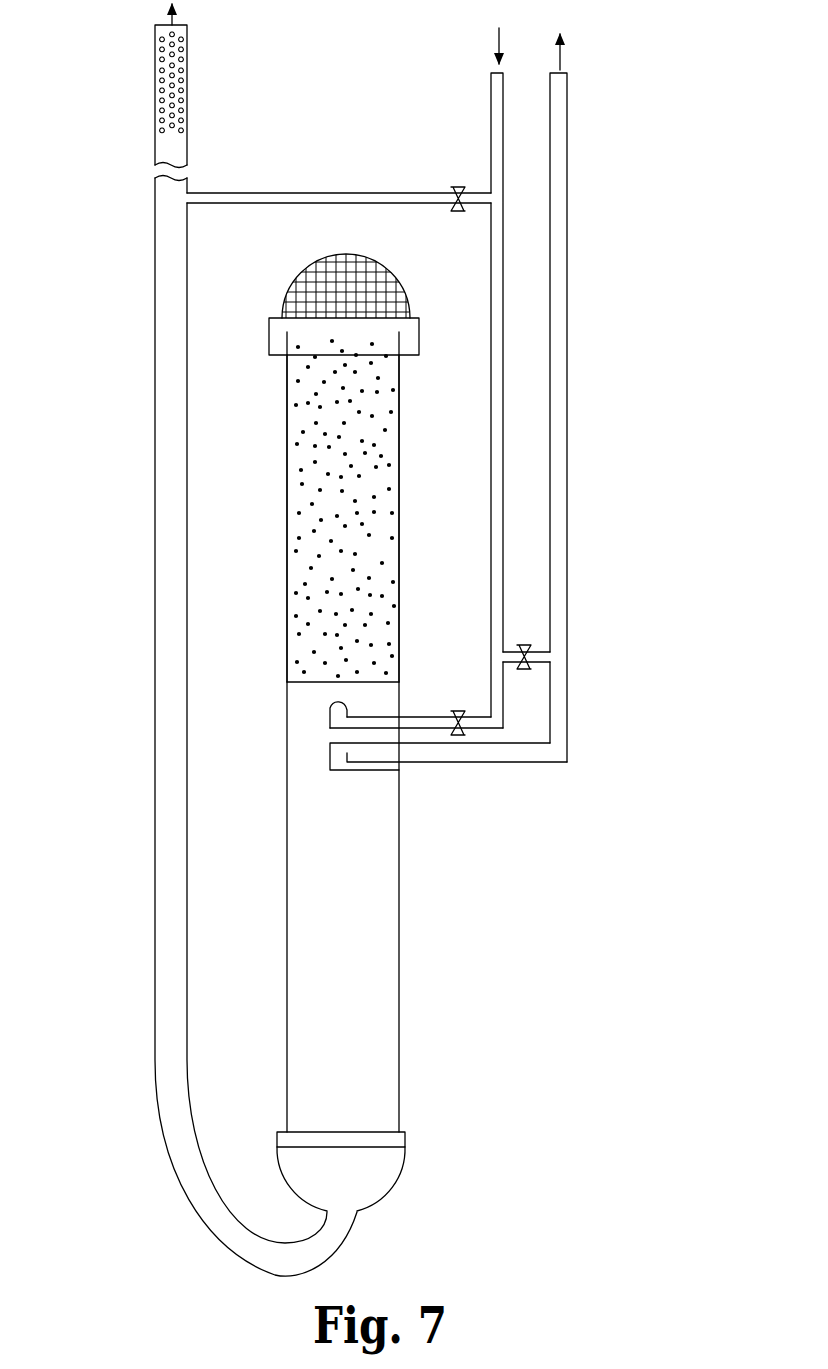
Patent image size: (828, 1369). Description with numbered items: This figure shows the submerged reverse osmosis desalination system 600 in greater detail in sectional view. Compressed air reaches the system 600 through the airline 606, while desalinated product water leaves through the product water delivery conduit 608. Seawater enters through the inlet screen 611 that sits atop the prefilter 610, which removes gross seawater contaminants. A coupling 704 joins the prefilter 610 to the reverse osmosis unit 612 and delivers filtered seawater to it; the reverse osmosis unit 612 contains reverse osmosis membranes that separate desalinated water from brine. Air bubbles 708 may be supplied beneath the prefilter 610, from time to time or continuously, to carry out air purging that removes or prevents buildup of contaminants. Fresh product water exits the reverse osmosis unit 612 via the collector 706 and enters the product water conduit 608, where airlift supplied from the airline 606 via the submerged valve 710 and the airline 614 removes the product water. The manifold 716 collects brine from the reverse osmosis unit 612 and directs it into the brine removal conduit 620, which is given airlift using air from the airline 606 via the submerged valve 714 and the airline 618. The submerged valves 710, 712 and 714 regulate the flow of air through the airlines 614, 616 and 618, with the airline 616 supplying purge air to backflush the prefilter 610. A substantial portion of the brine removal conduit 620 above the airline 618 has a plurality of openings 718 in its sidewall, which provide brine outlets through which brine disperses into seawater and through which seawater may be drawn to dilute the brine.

The system 600 is at (607, 142).
The airline 606 is at (490, 98).
The product water delivery conduit 608 is at (568, 396).
The prefilter 610 is at (287, 466).
The inlet screen 611 is at (284, 305).
The reverse osmosis unit 612 is at (286, 856).
The airline 614 is at (526, 643).
The airline 616 is at (346, 716).
The airline 618 is at (396, 191).
The brine removal conduit 620 is at (155, 441).
The coupling 704 is at (286, 731).
The collector 706 is at (330, 755).
The air bubbles 708 is at (322, 533).
The submerged valve 710 is at (526, 671).
The submerged valve 712 is at (455, 709).
The submerged valve 714 is at (457, 214).
The manifold 716 is at (389, 1191).
The openings 718 is at (130, 84).